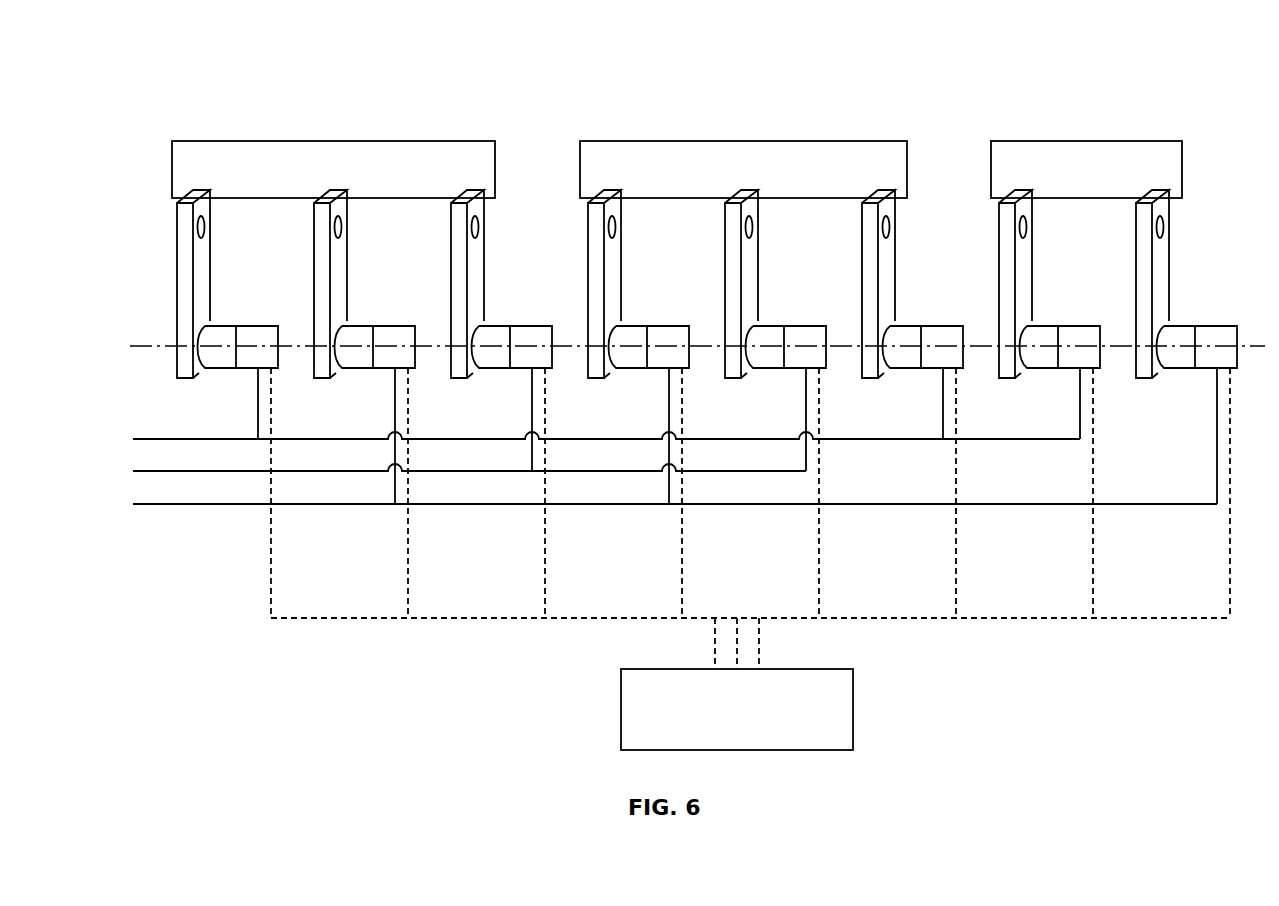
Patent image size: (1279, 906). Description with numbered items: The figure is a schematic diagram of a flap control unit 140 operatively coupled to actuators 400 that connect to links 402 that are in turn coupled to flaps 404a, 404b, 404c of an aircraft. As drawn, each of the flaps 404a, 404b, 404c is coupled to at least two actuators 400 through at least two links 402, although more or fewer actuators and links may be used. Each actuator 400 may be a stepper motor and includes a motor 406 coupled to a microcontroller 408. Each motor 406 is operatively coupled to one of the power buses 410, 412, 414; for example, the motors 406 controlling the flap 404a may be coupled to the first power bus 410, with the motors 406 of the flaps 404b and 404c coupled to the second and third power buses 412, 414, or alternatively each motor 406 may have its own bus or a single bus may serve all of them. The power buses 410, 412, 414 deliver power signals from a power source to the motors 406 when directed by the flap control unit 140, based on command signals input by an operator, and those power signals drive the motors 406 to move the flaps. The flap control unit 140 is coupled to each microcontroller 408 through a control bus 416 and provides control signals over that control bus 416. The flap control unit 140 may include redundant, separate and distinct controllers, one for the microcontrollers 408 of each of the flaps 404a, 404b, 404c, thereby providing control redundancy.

The flap control unit 140 is at (853, 710).
The actuator 400 is at (203, 323).
The link 402 is at (177, 258).
The flap 404a is at (452, 141).
The flap 404b is at (863, 141).
The flap 404c is at (1137, 141).
The motor 406 is at (219, 370).
The microcontroller 408 is at (280, 357).
The first power bus 410 is at (147, 439).
The second power bus 412 is at (147, 471).
The third power bus 414 is at (147, 504).
The control bus 416 is at (478, 617).